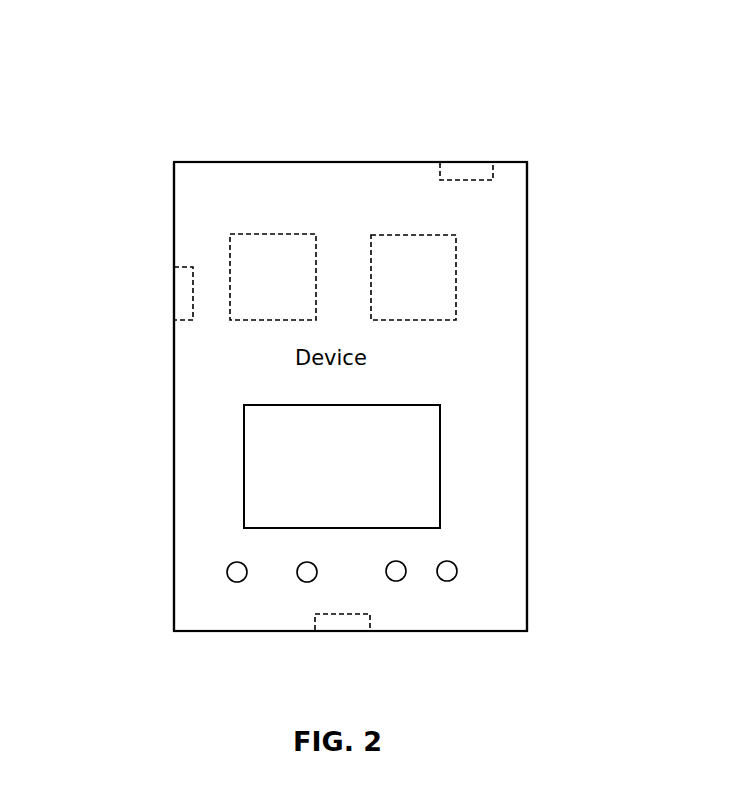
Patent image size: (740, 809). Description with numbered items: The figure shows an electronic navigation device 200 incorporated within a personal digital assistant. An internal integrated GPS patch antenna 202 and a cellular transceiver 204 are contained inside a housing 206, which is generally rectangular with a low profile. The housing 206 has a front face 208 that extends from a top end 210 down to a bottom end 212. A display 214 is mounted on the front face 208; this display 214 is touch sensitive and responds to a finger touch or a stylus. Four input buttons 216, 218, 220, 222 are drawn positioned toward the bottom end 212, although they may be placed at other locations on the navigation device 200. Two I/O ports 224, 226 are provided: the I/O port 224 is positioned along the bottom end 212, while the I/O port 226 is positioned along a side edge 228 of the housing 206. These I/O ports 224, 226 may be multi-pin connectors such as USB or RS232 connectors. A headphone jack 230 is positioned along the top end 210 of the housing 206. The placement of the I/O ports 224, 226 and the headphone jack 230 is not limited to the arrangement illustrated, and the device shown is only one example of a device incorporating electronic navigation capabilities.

The electronic navigation device 200 is at (130, 72).
The internal integrated GPS patch antenna 202 is at (272, 238).
The cellular transceiver 204 is at (411, 239).
The housing 206 is at (528, 429).
The front face 208 is at (514, 344).
The top end 210 is at (245, 162).
The bottom end 212 is at (510, 633).
The display 214 is at (424, 462).
The input button 216 is at (233, 582).
The input button 218 is at (303, 582).
The input button 220 is at (398, 581).
The input button 222 is at (449, 581).
The I/O port 224 is at (345, 631).
The I/O port 226 is at (178, 297).
The side edge 228 is at (172, 399).
The headphone jack 230 is at (465, 162).